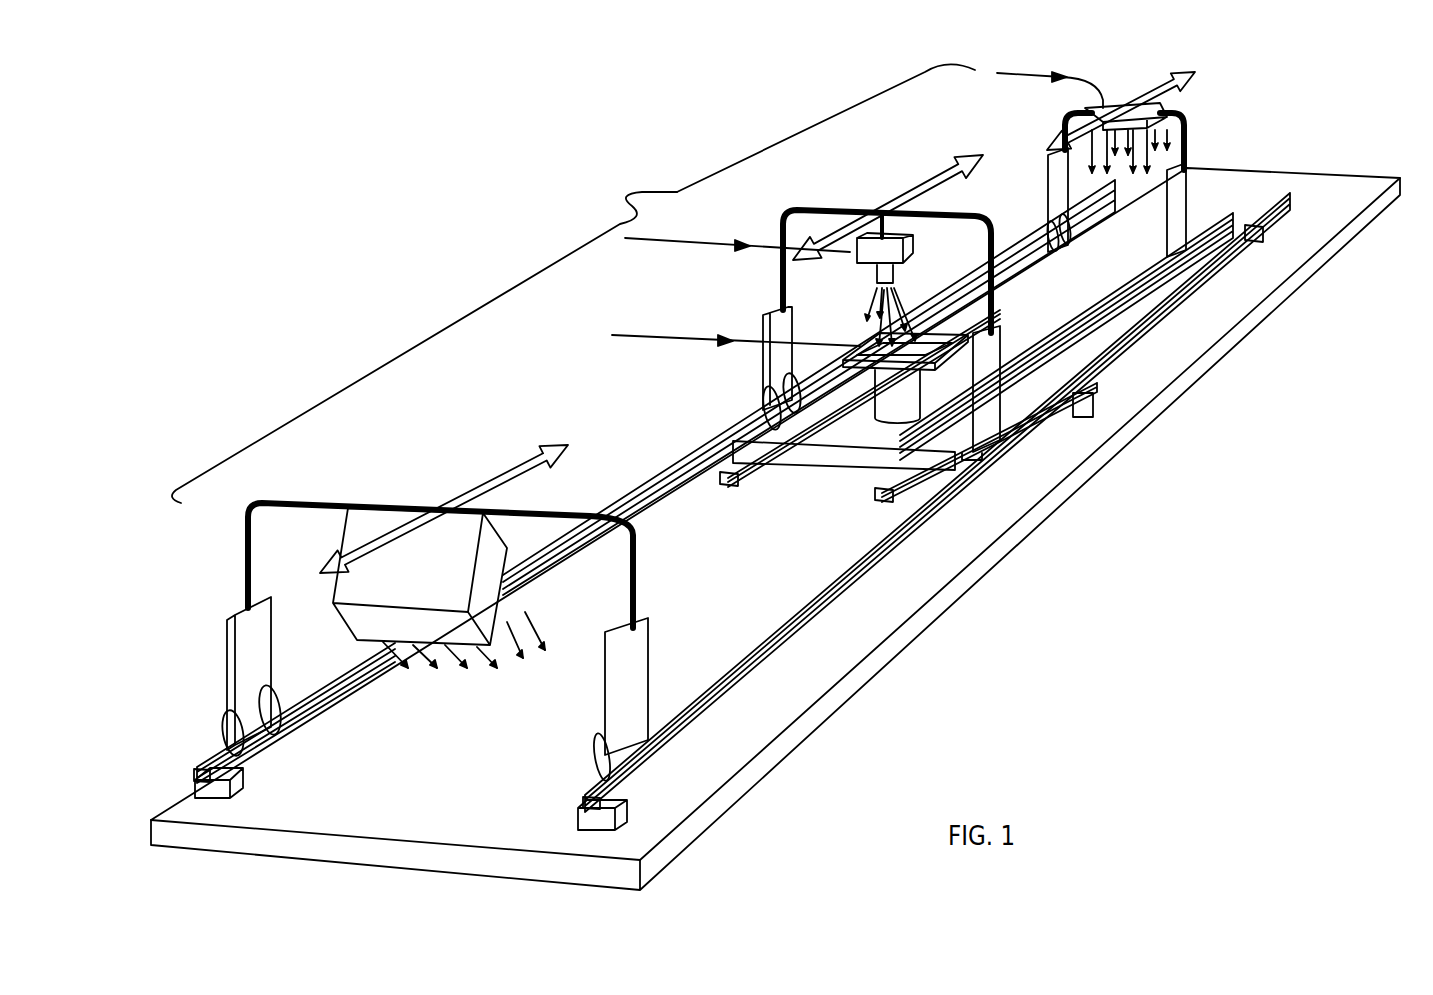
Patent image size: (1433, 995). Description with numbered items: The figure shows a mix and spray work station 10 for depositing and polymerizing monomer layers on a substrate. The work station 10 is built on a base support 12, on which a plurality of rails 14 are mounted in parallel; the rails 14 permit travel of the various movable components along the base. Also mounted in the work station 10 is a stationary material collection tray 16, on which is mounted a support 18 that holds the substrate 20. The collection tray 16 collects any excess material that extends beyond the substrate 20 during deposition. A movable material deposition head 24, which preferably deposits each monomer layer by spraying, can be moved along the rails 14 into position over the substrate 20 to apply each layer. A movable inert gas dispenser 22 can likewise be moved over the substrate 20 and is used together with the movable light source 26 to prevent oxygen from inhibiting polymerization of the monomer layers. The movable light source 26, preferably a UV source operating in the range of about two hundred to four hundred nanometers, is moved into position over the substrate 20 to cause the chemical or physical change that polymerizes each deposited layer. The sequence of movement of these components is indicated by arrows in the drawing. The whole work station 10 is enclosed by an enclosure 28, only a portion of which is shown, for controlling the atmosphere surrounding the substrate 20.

The work station 10 is at (1186, 431).
The base support 12 is at (1333, 190).
The rails 14 is at (700, 465).
The stationary material collection tray 16 is at (844, 493).
The support 18 is at (900, 348).
The substrate 20 is at (963, 347).
The movable inert gas dispenser 22 is at (1173, 107).
The movable material deposition head 24 is at (866, 240).
The movable light source 26 is at (380, 523).
The enclosure 28 is at (640, 192).